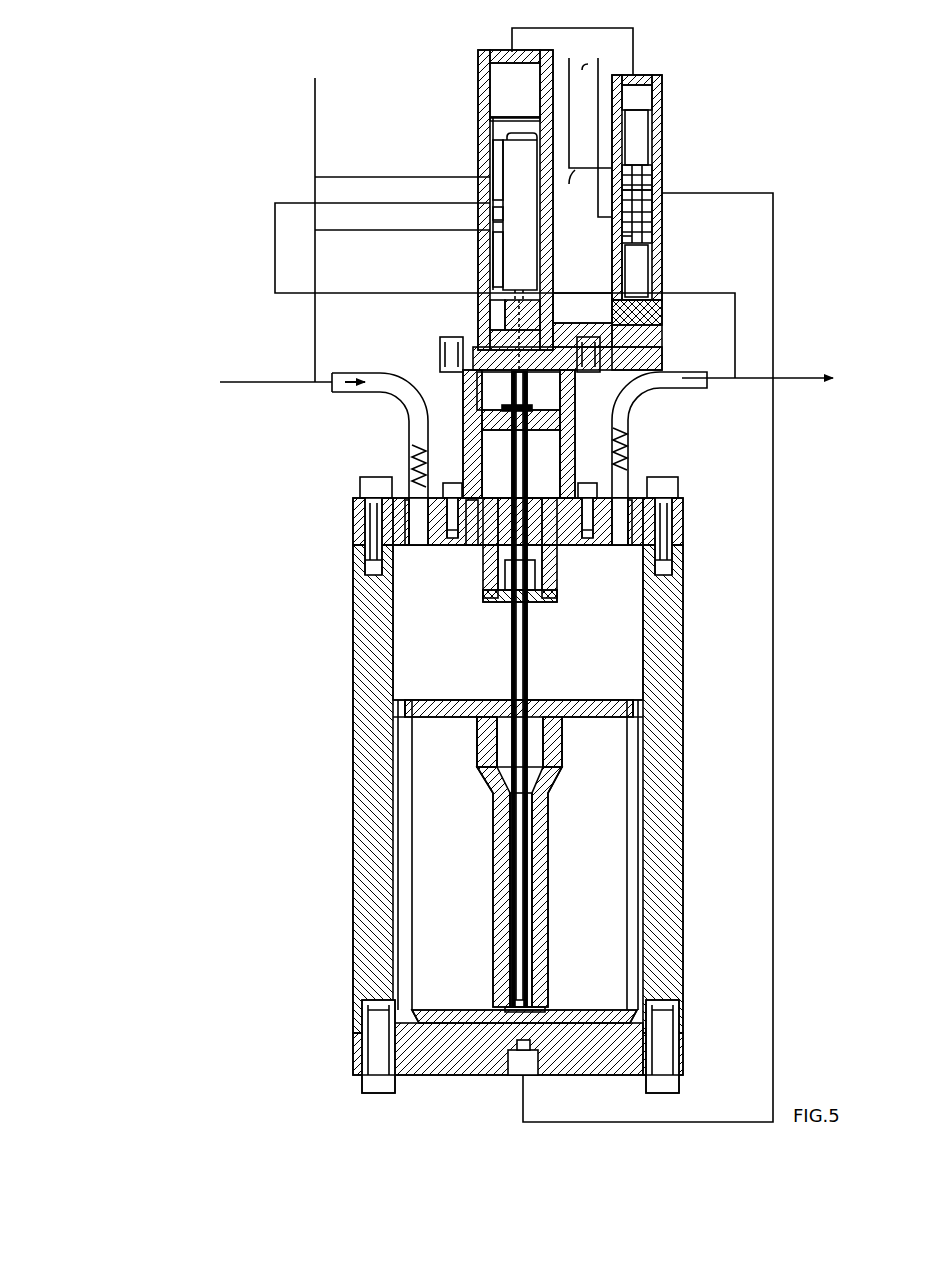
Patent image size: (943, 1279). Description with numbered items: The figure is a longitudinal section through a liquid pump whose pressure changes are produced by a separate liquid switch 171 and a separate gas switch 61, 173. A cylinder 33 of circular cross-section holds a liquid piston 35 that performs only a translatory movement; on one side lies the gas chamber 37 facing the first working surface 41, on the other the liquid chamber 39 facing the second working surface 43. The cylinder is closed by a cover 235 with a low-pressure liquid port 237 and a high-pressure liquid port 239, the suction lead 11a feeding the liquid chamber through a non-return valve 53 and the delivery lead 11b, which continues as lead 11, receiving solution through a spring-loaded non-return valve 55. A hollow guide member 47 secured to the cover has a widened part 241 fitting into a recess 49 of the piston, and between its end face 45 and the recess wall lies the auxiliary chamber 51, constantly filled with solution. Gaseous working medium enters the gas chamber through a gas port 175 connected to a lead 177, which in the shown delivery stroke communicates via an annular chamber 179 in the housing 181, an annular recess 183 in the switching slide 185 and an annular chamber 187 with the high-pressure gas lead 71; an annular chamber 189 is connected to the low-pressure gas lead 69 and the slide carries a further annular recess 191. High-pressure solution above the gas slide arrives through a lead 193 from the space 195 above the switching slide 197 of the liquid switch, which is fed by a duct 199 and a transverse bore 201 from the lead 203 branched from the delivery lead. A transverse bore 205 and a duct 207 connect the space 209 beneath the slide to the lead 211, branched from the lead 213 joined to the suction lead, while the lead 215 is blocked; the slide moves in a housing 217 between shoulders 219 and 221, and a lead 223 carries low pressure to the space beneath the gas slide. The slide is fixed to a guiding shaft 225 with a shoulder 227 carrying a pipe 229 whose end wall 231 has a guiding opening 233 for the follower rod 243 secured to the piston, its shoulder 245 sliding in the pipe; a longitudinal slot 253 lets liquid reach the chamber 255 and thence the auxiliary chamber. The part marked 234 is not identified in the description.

The lead 11 is at (262, 380).
The suction lead 11a is at (384, 377).
The delivery lead 11b is at (655, 395).
The cylinder 33 is at (660, 656).
The liquid piston 35 is at (638, 905).
The gas chamber 37 is at (455, 1035).
The liquid chamber 39 is at (620, 630).
The first working surface 41 is at (585, 1035).
The second working surface 43 is at (425, 700).
The end face 45 is at (566, 832).
The guide member 47 is at (495, 583).
The recess 49 is at (505, 918).
The auxiliary chamber 51 is at (520, 852).
The non-return valve 53 is at (412, 457).
The non-return valve 55 is at (626, 452).
The gas switch 61 is at (637, 335).
The lead 69 is at (590, 137).
The lead 71 is at (571, 186).
The liquid switch 171 is at (476, 132).
The gas switch 173 is at (664, 112).
The gas port 175 is at (518, 1065).
The lead 177 is at (773, 243).
The annular chamber 179 is at (652, 196).
The housing 181 is at (622, 258).
The annular recess 183 is at (650, 187).
The switching slide 185 is at (640, 262).
The annular chamber 187 is at (645, 163).
The annular chamber 189 is at (652, 238).
The annular recess 191 is at (622, 238).
The lead 193 is at (534, 30).
The space 195 is at (500, 73).
The switching slide 197 is at (523, 262).
The duct 199 is at (493, 155).
The transverse bore 201 is at (500, 196).
The lead 203 is at (275, 240).
The transverse bore 205 is at (498, 222).
The duct 207 is at (505, 285).
The space 209 is at (498, 318).
The lead 211 is at (343, 235).
The lead 213 is at (315, 142).
The lead 215 is at (380, 172).
The housing 217 is at (488, 252).
The shoulder 219 is at (491, 115).
The shoulder 221 is at (582, 320).
The lead 223 is at (622, 328).
The guiding shaft 225 is at (478, 387).
The shoulder 227 is at (472, 425).
The pipe 229 is at (530, 452).
The end wall 231 is at (540, 590).
The guiding opening 233 is at (500, 592).
The rod end 234 is at (520, 913).
The cover 235 is at (472, 540).
The low-pressure liquid port 237 is at (421, 540).
The high-pressure liquid port 239 is at (620, 540).
The widened part 241 is at (505, 810).
The follower rod 243 is at (522, 650).
The shoulder 245 is at (540, 566).
The longitudinal slot 253 is at (566, 387).
The chamber 255 is at (490, 460).